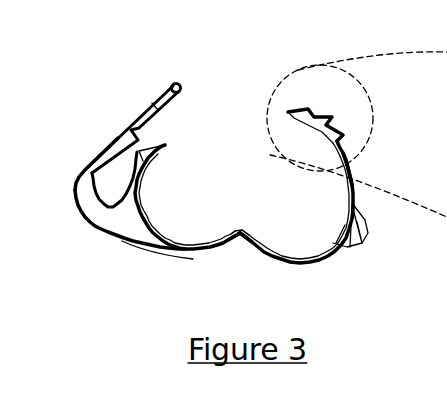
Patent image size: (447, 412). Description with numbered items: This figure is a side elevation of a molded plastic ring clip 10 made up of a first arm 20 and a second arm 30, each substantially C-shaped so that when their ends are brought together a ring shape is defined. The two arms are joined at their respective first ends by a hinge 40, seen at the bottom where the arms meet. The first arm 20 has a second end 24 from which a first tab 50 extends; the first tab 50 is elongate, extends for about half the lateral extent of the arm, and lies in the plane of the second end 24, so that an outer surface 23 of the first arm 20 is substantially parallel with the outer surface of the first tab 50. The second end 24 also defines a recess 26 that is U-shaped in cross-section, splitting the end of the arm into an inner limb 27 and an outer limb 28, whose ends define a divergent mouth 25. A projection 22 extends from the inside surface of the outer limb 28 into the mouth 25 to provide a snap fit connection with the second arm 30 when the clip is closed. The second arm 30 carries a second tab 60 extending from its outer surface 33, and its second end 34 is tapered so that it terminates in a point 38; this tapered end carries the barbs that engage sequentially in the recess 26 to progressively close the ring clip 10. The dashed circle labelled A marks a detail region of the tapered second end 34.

The ring clip 10 is at (268, 30).
The first arm 20 is at (170, 235).
The projection 22 is at (137, 118).
The outer surface 23 is at (92, 150).
The second end 24 is at (150, 107).
The mouth 25 is at (152, 135).
The recess 26 is at (120, 177).
The inner limb 27 is at (133, 217).
The outer limb 28 is at (80, 178).
The second arm 30 is at (303, 247).
The outer surface 33 is at (353, 170).
The second end 34 is at (315, 113).
The point 38 is at (358, 134).
The hinge 40 is at (242, 237).
The first tab 50 is at (175, 80).
The second tab 60 is at (350, 250).
The detail region A is at (371, 105).